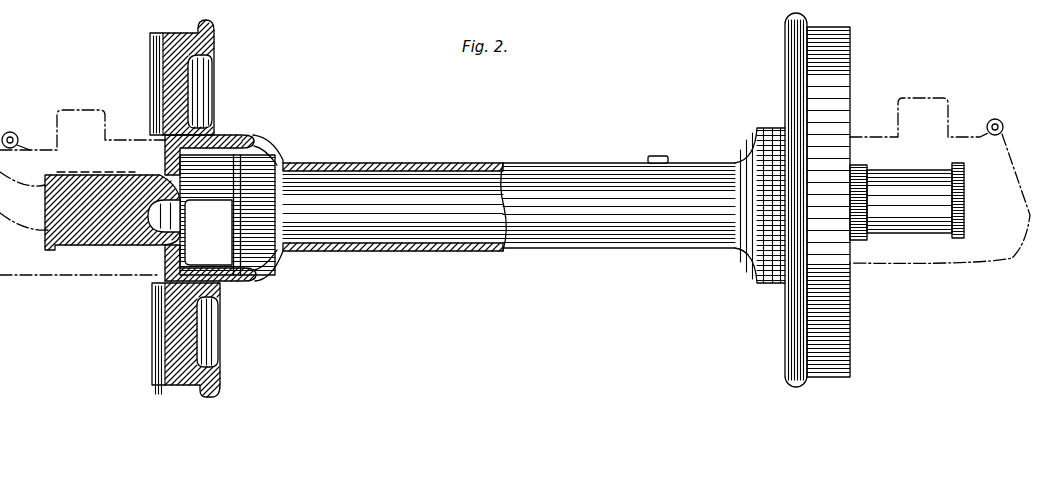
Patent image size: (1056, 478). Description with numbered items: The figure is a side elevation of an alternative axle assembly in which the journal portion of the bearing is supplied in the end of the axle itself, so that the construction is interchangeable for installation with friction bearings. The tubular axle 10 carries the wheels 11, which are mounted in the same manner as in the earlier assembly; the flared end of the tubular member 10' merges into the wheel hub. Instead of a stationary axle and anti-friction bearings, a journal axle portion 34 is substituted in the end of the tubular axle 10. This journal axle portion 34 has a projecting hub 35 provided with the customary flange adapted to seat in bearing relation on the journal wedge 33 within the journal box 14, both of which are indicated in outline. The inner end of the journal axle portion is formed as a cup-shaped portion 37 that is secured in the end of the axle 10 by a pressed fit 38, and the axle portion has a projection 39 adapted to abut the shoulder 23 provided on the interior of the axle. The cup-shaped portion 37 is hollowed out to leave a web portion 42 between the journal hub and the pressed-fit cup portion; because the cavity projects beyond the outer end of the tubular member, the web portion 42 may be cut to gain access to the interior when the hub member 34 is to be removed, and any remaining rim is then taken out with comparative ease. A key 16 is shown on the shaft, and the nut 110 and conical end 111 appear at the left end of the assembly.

The tubular axle 10 is at (534, 205).
The flared shaft end 10' is at (498, 195).
The wheel 11 is at (205, 38).
The journal box 14 is at (63, 108).
The key 16 is at (658, 156).
The shoulder 23 is at (200, 317).
The journal wedge 33 is at (100, 175).
The journal axle portion 34 is at (108, 245).
The projecting hub 35 is at (48, 232).
The cup-shaped portion 37 is at (255, 135).
The pressed fit 38 is at (250, 285).
The projection 39 is at (168, 275).
The web portion 42 is at (103, 173).
The nut 110 is at (270, 222).
The conical end 111 is at (160, 218).